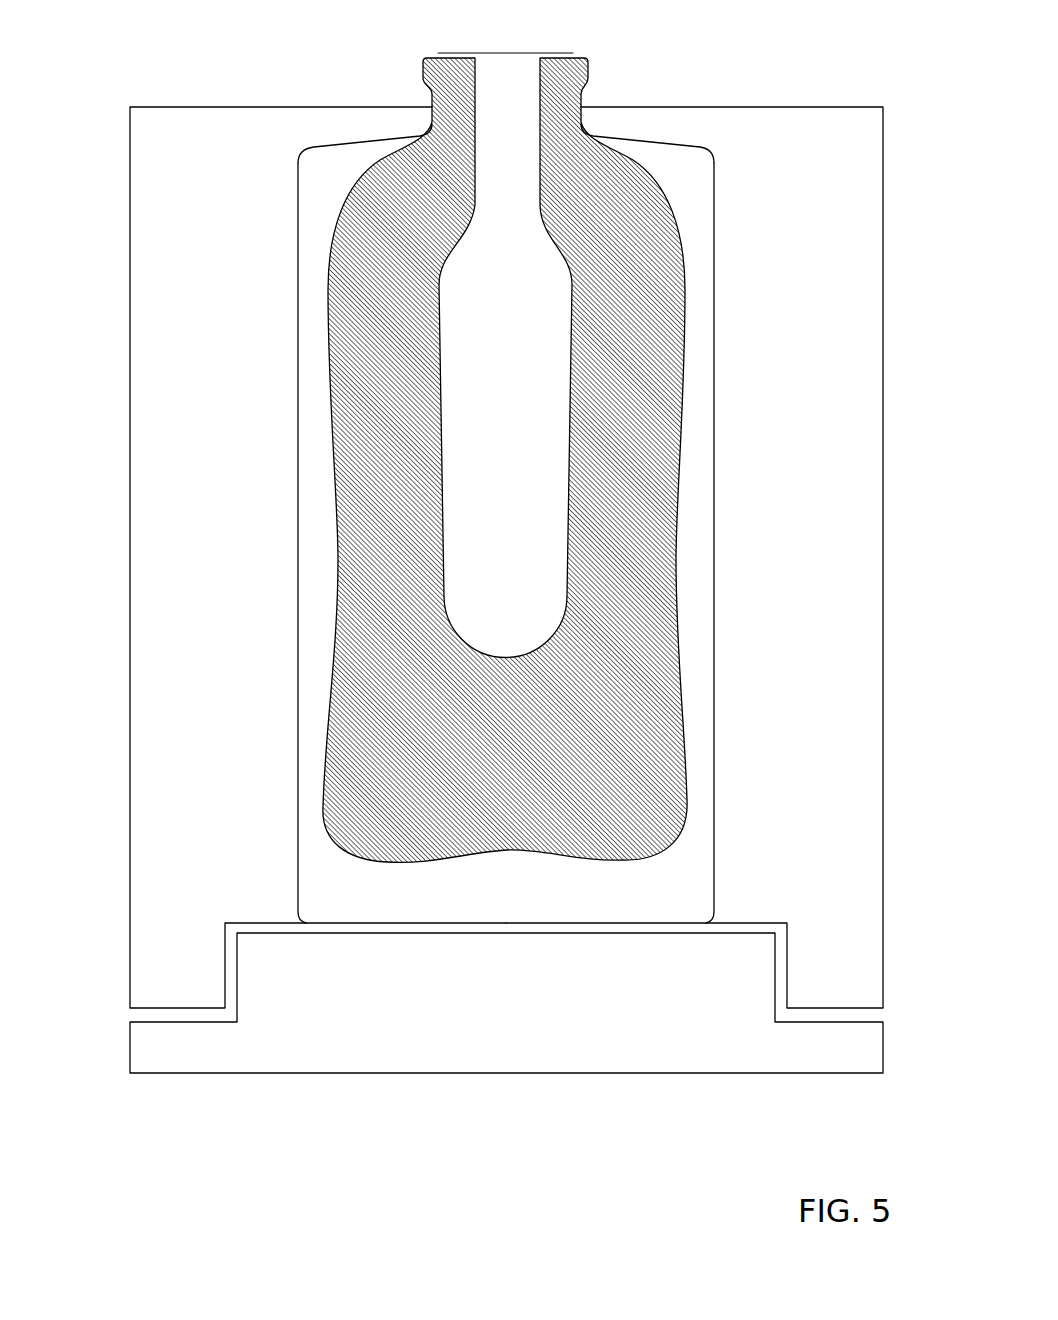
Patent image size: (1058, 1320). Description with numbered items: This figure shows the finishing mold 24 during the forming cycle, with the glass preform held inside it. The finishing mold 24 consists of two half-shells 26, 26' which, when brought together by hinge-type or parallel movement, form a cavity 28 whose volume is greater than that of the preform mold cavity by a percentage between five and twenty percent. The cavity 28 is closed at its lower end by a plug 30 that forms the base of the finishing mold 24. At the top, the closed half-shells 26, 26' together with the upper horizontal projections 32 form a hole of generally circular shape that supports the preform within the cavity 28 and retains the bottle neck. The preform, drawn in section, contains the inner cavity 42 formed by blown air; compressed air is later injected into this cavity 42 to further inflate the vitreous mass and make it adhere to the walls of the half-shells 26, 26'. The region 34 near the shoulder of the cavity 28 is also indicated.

The finishing mold 24 is at (502, 554).
The half-shell 26 is at (725, 557).
The half-shell 26' is at (274, 557).
The cavity 28 is at (521, 894).
The plug 30 is at (613, 1047).
The upper horizontal projections 32 is at (342, 130).
The cavity shoulder region 34 is at (698, 163).
The inner cavity 42 is at (515, 387).